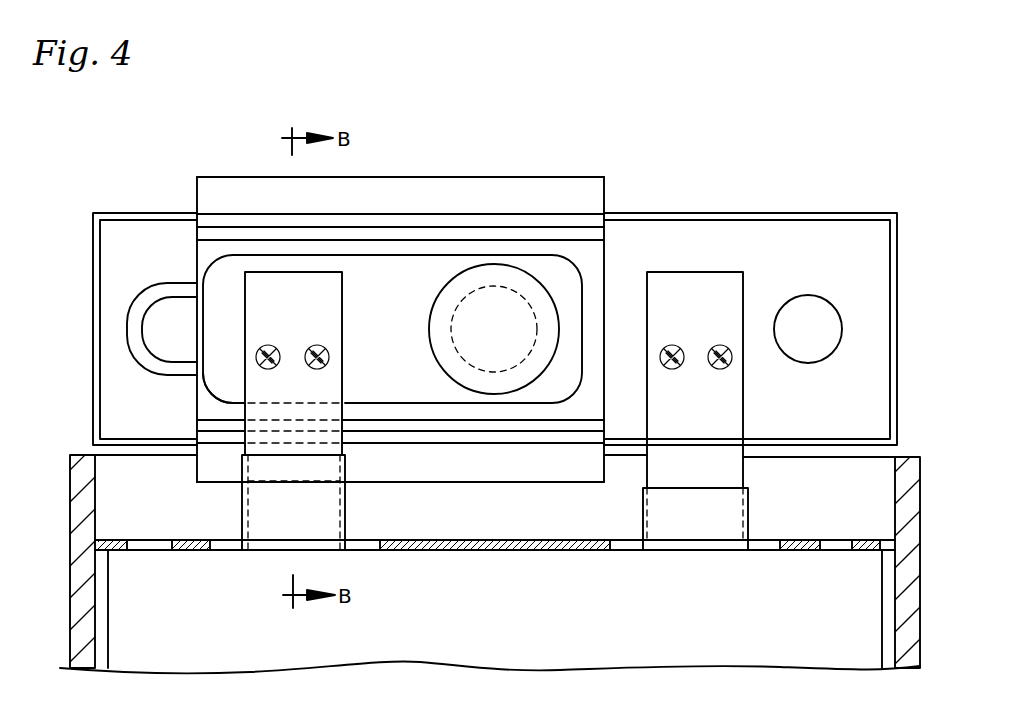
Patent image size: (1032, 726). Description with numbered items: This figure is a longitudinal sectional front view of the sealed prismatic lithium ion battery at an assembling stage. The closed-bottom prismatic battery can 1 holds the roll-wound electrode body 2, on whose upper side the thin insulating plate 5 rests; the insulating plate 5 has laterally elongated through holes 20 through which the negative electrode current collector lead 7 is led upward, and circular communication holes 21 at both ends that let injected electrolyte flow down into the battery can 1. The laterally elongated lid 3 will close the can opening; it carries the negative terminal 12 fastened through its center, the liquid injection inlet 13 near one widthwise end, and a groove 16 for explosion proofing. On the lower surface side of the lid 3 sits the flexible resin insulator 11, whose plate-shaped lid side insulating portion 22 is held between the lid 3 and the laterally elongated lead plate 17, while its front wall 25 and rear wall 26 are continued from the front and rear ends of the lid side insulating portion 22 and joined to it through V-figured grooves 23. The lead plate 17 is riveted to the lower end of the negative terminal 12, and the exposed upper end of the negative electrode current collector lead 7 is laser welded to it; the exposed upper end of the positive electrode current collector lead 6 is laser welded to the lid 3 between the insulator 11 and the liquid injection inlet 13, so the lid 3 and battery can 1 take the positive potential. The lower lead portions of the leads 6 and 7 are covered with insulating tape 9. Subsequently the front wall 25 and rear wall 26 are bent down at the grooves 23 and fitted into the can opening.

The battery can 1 is at (68, 478).
The electrode body 2 is at (515, 647).
The lid 3 is at (772, 203).
The insulating plate 5 is at (478, 562).
The positive electrode current collector lead 6 is at (708, 287).
The negative electrode current collector lead 7 is at (330, 312).
The insulating tape 9 is at (242, 500).
The insulator 11 is at (475, 168).
The negative terminal 12 is at (435, 323).
The liquid injection inlet 13 is at (835, 310).
The groove for explosion proofing 16 is at (140, 308).
The lead plate 17 is at (223, 375).
The through holes 20 is at (212, 543).
The communication holes 21 is at (128, 543).
The lid side insulating portion 22 is at (593, 295).
The V-figured grooves 23 is at (553, 222).
The front wall 25 is at (435, 462).
The rear wall 26 is at (420, 197).